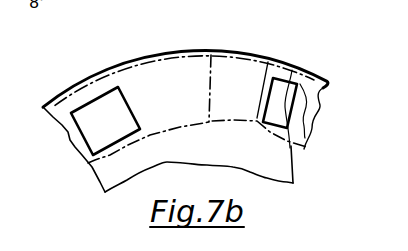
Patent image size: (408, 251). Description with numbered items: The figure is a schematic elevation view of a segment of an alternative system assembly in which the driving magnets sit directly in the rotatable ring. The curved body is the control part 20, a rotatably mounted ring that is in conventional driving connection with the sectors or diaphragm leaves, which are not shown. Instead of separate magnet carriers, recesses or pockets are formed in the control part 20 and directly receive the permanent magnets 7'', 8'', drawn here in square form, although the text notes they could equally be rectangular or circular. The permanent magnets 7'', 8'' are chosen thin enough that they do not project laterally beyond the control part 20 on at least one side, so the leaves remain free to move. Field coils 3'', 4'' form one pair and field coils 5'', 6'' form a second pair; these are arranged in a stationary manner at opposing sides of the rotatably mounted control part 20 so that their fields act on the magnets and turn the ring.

The control part 20 is at (231, 49).
The field coil 3'' is at (185, 53).
The field coil 4'' is at (184, 52).
The permanent magnet 7'' is at (102, 91).
The permanent magnet 8'' is at (285, 73).
The field coil 5'' is at (305, 83).
The field coil 6'' is at (338, 78).